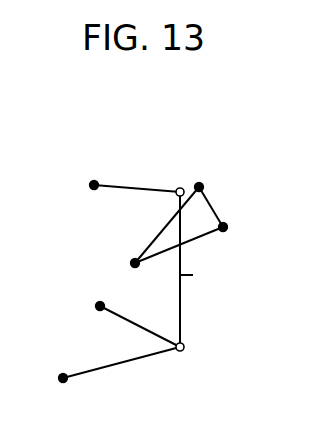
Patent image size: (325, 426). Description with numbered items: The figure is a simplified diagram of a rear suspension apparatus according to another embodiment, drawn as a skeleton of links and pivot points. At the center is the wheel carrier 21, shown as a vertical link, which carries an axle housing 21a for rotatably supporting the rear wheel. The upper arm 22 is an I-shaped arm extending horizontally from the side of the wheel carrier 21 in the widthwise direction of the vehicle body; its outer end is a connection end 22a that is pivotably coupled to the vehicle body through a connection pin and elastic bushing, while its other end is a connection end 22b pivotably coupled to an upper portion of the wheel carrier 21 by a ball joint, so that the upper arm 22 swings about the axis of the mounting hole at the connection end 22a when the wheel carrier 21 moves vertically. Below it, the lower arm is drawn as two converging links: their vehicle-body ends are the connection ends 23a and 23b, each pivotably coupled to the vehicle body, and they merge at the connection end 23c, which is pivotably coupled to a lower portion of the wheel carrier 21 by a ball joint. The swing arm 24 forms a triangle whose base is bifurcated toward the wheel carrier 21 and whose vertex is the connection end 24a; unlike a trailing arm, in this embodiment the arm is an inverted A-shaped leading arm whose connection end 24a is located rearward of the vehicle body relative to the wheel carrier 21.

The wheel carrier 21 is at (181, 312).
The axle housing 21a is at (193, 275).
The upper arm 22 is at (150, 189).
The connection end 22a is at (94, 185).
The connection end 22b is at (180, 188).
The connection end 23a is at (63, 378).
The connection end 23b is at (100, 306).
The connection end 23c is at (180, 347).
The trailing arm 24 is at (217, 212).
The connection end 24a is at (199, 187).